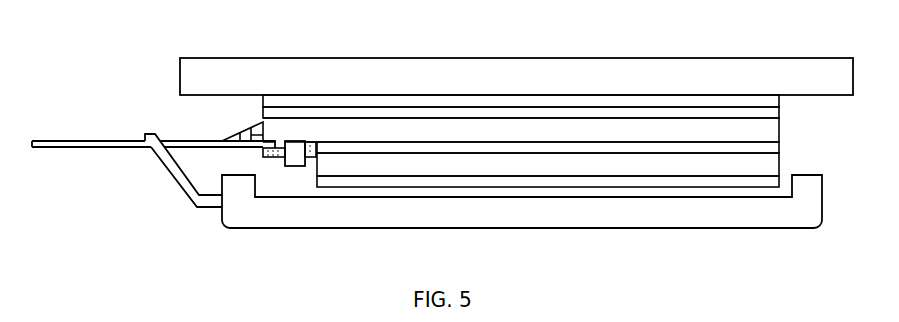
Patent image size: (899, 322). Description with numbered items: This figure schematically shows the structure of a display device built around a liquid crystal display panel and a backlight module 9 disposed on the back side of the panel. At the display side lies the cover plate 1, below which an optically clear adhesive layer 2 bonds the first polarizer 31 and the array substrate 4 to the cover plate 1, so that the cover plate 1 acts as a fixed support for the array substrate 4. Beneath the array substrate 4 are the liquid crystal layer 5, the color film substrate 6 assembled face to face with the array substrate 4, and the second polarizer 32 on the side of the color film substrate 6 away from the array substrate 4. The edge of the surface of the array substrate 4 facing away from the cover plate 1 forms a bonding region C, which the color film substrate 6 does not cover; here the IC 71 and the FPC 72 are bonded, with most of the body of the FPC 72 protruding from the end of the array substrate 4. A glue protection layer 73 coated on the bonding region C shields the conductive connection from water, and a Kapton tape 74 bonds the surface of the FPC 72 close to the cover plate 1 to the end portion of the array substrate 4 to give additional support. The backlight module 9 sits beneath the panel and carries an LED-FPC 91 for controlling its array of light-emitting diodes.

The cover plate 1 is at (380, 72).
The optically clear adhesive layer 2 is at (426, 100).
The first polarizer 31 is at (482, 112).
The array substrate 4 is at (535, 132).
The liquid crystal layer 5 is at (597, 150).
The color film substrate 6 is at (658, 167).
The second polarizer 32 is at (722, 185).
The IC 71 is at (296, 147).
The FPC 72 is at (188, 143).
The glue protection layer 73 is at (280, 147).
The Kapton tape 74 is at (245, 131).
The backlight module 9 is at (227, 225).
The LED-FPC 91 is at (172, 173).
The bonding region C is at (301, 161).